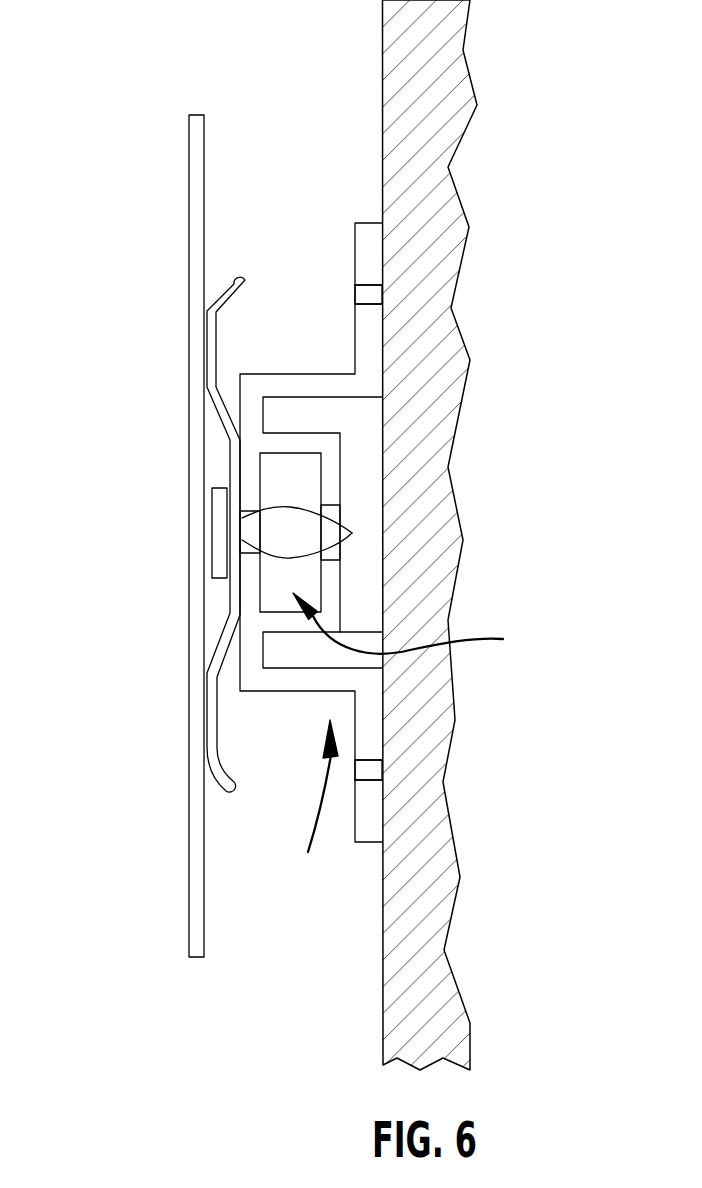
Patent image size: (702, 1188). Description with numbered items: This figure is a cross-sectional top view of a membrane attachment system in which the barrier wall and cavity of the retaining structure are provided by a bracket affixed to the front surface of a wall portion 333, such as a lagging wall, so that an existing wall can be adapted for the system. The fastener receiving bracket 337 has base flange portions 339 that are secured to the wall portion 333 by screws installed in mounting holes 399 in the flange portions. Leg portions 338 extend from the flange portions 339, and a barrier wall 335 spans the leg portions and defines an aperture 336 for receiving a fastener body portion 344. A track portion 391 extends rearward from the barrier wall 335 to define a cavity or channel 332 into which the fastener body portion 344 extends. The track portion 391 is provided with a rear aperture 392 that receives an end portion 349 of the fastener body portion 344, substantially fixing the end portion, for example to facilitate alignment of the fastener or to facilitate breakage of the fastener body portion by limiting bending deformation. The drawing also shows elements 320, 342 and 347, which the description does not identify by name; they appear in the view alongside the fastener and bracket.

The panel 320 is at (198, 231).
The wall portion 333 is at (418, 707).
The leg portions 338 is at (290, 375).
The base flange portions 339 is at (355, 253).
The mounting holes 399 is at (367, 286).
The track portion 391 is at (330, 443).
The barrier wall 335 is at (253, 414).
The cavity or channel 332 is at (399, 555).
The end portion 349 is at (335, 513).
The rear aperture 392 is at (330, 560).
The engagement surface 347 is at (293, 542).
The apertures 336 is at (255, 513).
The fastener body portion 344 is at (278, 542).
The spring clip 342 is at (228, 437).
The fastener receiving bracket 337 is at (314, 803).